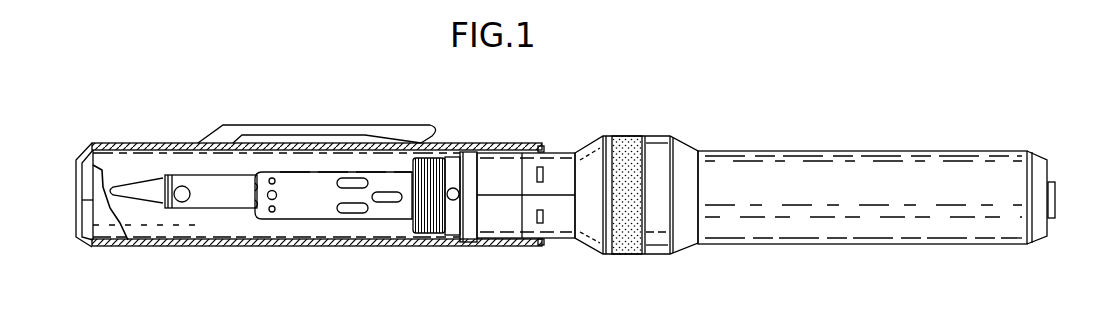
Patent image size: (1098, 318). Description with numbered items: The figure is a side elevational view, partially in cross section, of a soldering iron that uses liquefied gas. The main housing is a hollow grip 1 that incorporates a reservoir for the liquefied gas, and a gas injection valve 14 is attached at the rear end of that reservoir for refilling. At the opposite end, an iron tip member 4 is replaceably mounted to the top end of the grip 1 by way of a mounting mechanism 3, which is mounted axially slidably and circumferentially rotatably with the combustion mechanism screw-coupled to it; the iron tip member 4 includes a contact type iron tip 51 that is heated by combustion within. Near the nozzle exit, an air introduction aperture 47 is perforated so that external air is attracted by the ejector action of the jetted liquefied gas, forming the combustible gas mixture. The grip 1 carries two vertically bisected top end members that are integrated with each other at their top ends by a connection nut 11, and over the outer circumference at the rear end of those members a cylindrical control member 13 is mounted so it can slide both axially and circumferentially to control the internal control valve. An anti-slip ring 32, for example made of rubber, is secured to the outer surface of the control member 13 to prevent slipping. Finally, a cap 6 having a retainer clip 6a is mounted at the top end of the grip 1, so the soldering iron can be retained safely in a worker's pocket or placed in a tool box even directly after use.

The grip 1 is at (797, 138).
The mounting mechanism 3 is at (436, 234).
The iron tip member 4 is at (270, 228).
The cap 6 is at (166, 247).
The retainer clip 6a is at (360, 126).
The connection nut 11 is at (503, 228).
The control member 13 is at (657, 148).
The gas injection valve 14 is at (1056, 198).
The anti-slip ring 32 is at (628, 255).
The air introduction aperture 47 is at (455, 188).
The contact type iron tip 51 is at (545, 139).